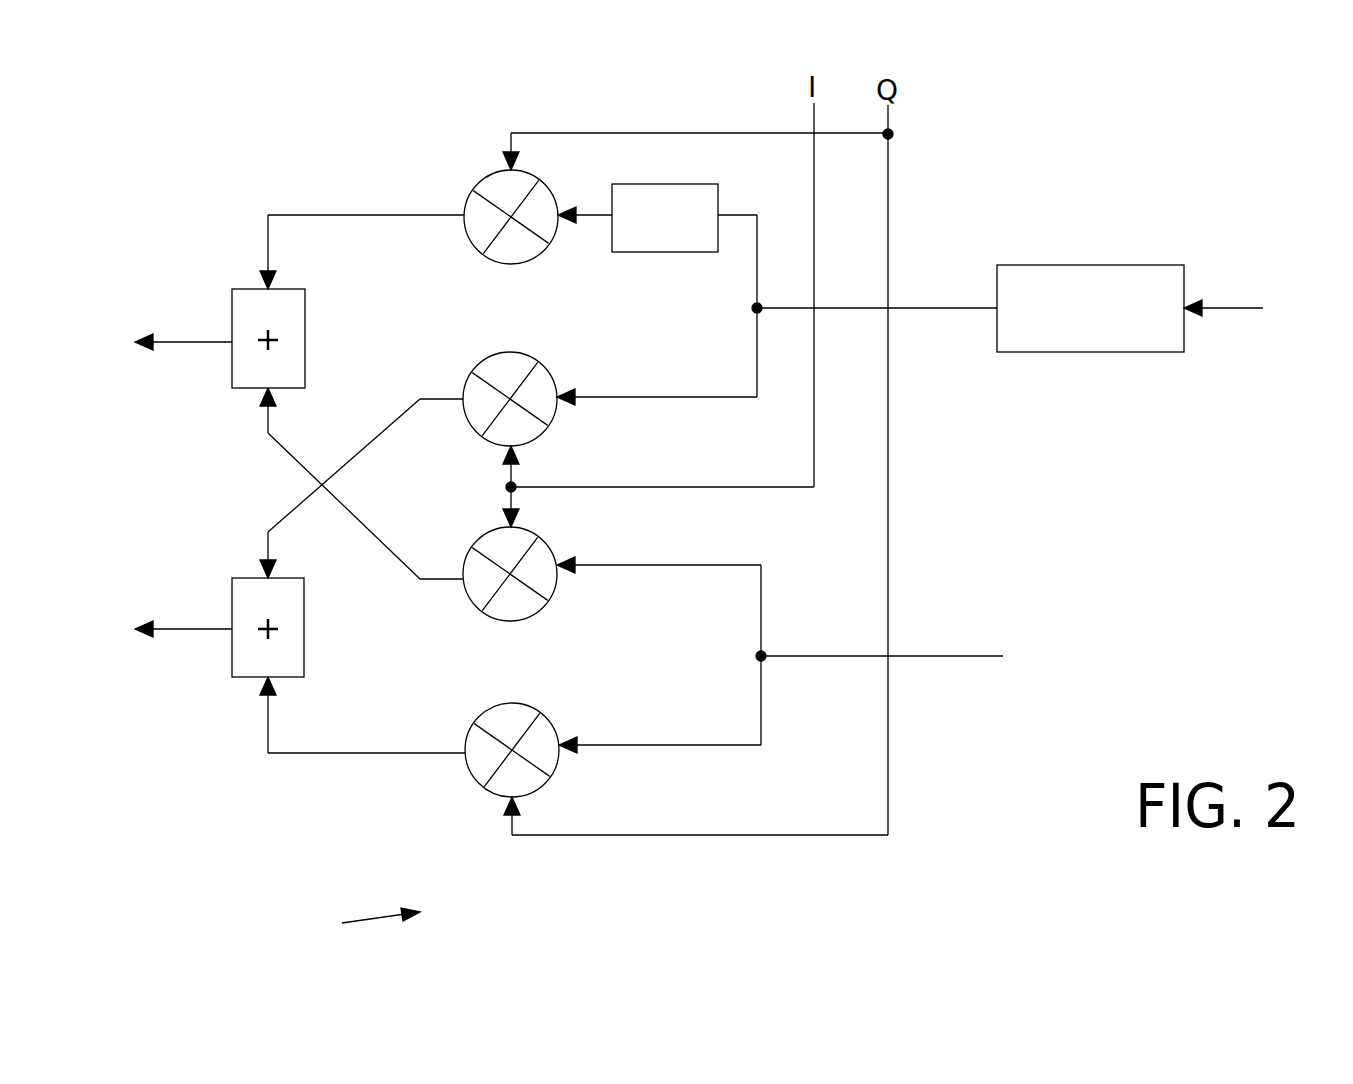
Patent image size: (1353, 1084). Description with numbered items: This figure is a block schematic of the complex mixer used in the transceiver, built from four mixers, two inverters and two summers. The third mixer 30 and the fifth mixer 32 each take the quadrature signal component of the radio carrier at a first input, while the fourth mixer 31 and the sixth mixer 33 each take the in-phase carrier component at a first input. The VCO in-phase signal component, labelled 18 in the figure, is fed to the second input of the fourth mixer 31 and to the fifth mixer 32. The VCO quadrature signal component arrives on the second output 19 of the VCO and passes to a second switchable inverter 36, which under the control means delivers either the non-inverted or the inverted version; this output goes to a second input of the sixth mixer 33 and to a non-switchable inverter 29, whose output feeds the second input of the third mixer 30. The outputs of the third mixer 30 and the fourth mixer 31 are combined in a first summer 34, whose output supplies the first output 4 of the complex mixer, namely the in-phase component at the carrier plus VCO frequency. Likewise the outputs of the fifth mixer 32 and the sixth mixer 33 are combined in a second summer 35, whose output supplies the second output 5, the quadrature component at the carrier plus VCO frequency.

The first output 4 is at (178, 337).
The second output 5 is at (165, 630).
The I input signal 18 is at (984, 652).
The second output of the VCO 19 is at (1228, 308).
The non-switchable inverter 29 is at (668, 254).
The third mixer 30 is at (475, 190).
The fourth mixer 31 is at (472, 622).
The fifth mixer 32 is at (472, 775).
The sixth mixer 33 is at (470, 365).
The first summer 34 is at (230, 370).
The second summer 35 is at (240, 680).
The second switchable inverter 36 is at (1075, 352).